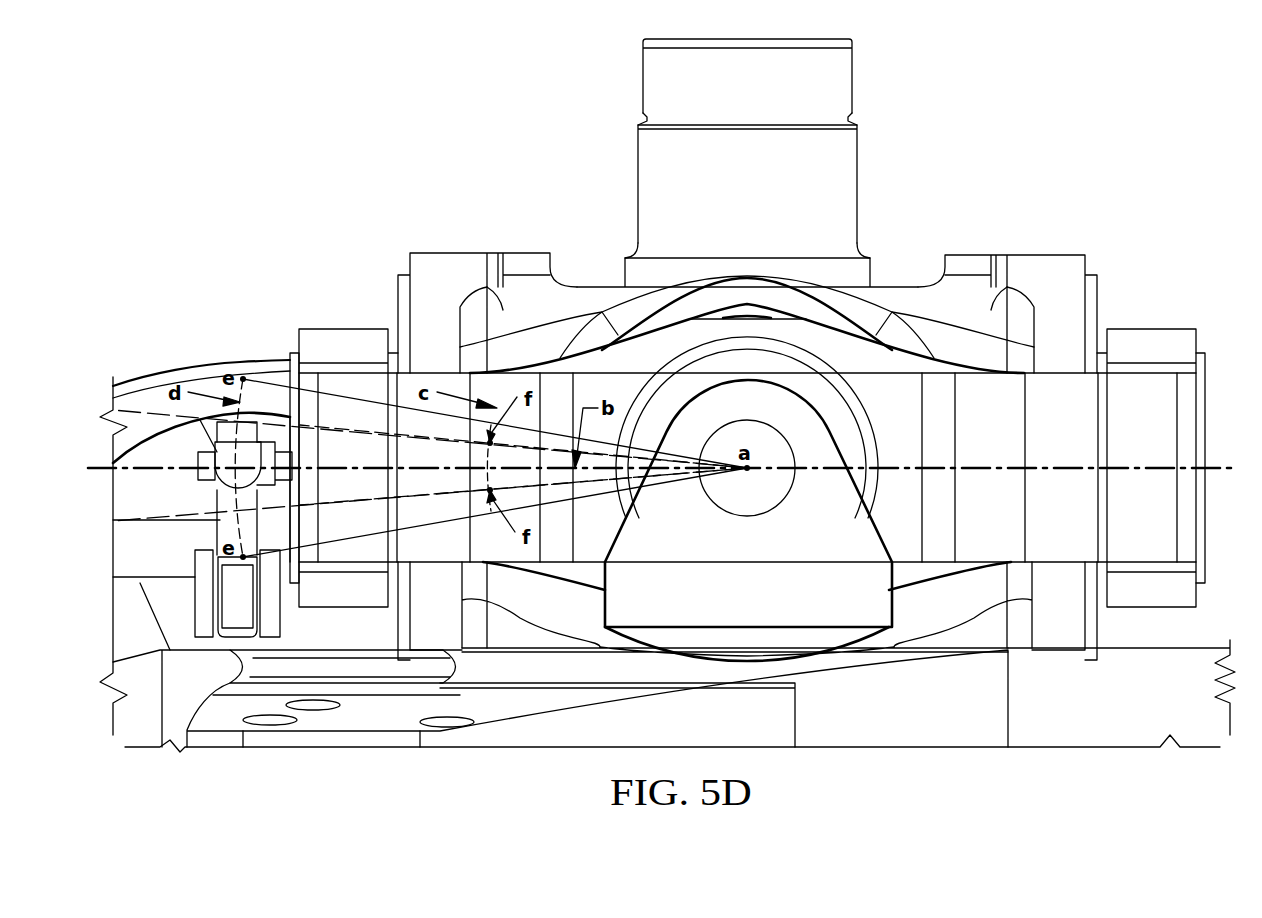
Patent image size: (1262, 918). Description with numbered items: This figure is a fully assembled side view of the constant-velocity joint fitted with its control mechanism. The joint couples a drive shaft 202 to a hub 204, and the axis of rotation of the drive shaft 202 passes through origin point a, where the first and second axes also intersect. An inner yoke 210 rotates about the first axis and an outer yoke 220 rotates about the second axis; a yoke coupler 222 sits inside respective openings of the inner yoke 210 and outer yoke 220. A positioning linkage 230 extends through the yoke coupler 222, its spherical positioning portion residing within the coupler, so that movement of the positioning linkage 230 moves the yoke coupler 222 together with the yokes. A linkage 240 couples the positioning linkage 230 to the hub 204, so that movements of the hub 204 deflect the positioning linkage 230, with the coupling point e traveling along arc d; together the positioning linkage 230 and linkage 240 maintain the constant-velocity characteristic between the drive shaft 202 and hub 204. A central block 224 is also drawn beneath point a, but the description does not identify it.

The drive shaft 202 is at (770, 200).
The hub 204 is at (338, 748).
The inner yoke 210 is at (450, 253).
The outer yoke 220 is at (355, 329).
The yoke coupler 222 is at (293, 352).
The support block 224 is at (770, 588).
The positioning linkage 230 is at (217, 493).
The linkage 240 is at (215, 538).